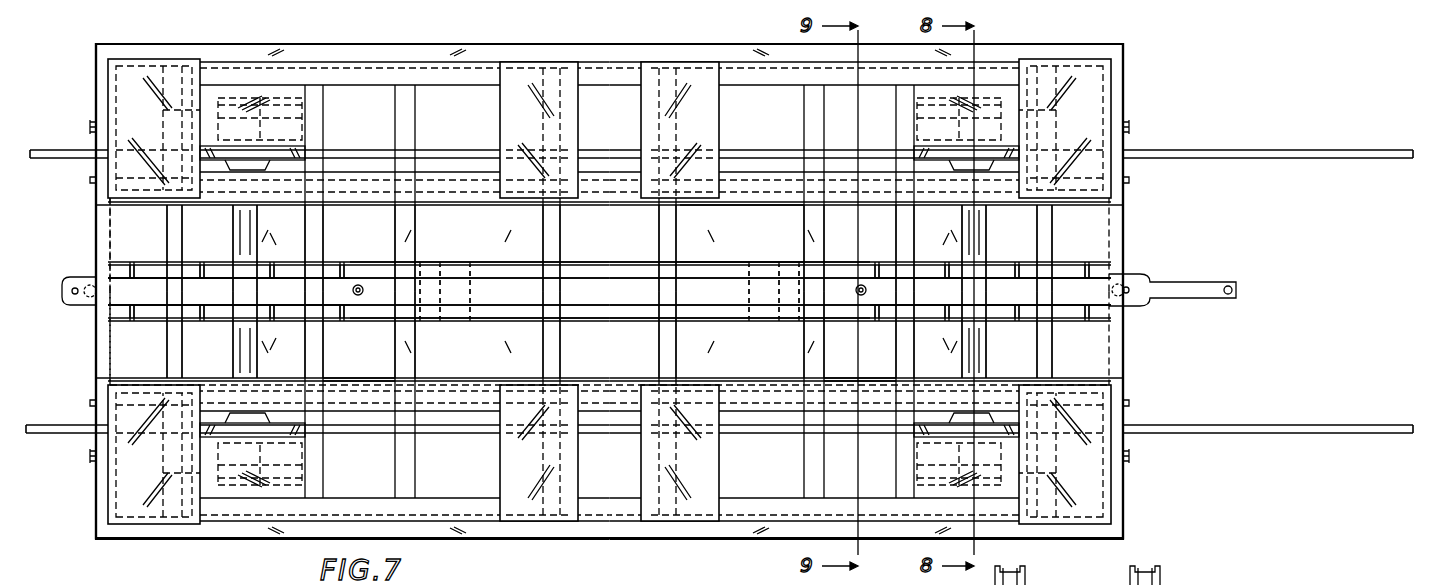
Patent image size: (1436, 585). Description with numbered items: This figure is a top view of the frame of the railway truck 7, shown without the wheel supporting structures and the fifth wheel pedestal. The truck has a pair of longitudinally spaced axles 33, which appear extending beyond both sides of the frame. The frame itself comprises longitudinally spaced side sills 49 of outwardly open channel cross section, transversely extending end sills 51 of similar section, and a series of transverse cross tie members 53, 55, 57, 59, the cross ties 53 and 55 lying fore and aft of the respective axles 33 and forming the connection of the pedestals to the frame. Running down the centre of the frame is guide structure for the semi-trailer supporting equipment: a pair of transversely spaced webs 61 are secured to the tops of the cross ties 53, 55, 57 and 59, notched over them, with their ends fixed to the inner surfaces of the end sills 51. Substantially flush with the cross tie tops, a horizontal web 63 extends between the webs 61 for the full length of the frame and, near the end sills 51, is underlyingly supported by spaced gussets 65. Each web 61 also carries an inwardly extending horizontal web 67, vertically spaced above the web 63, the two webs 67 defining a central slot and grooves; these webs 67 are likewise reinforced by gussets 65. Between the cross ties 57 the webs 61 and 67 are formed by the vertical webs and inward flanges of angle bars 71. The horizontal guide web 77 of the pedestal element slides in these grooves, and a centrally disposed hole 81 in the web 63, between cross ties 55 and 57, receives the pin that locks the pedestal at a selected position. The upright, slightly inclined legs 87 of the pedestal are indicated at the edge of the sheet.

The railway truck 7 is at (1155, 81).
The axle 33 is at (296, 350).
The side sill 49 is at (610, 44).
The end sill 51 is at (96, 232).
The cross tie member 53 is at (165, 365).
The cross tie member 55 is at (395, 360).
The cross tie member 57 is at (415, 357).
The cross tie member 59 is at (543, 240).
The web 61 is at (140, 262).
The horizontal web 63 is at (288, 302).
The gusset 65 is at (330, 272).
The horizontal web 67 is at (200, 300).
The angle bar 71 is at (738, 262).
The horizontal guide web 77 is at (478, 310).
The hole 81 is at (368, 290).
The leg 87 is at (1028, 582).